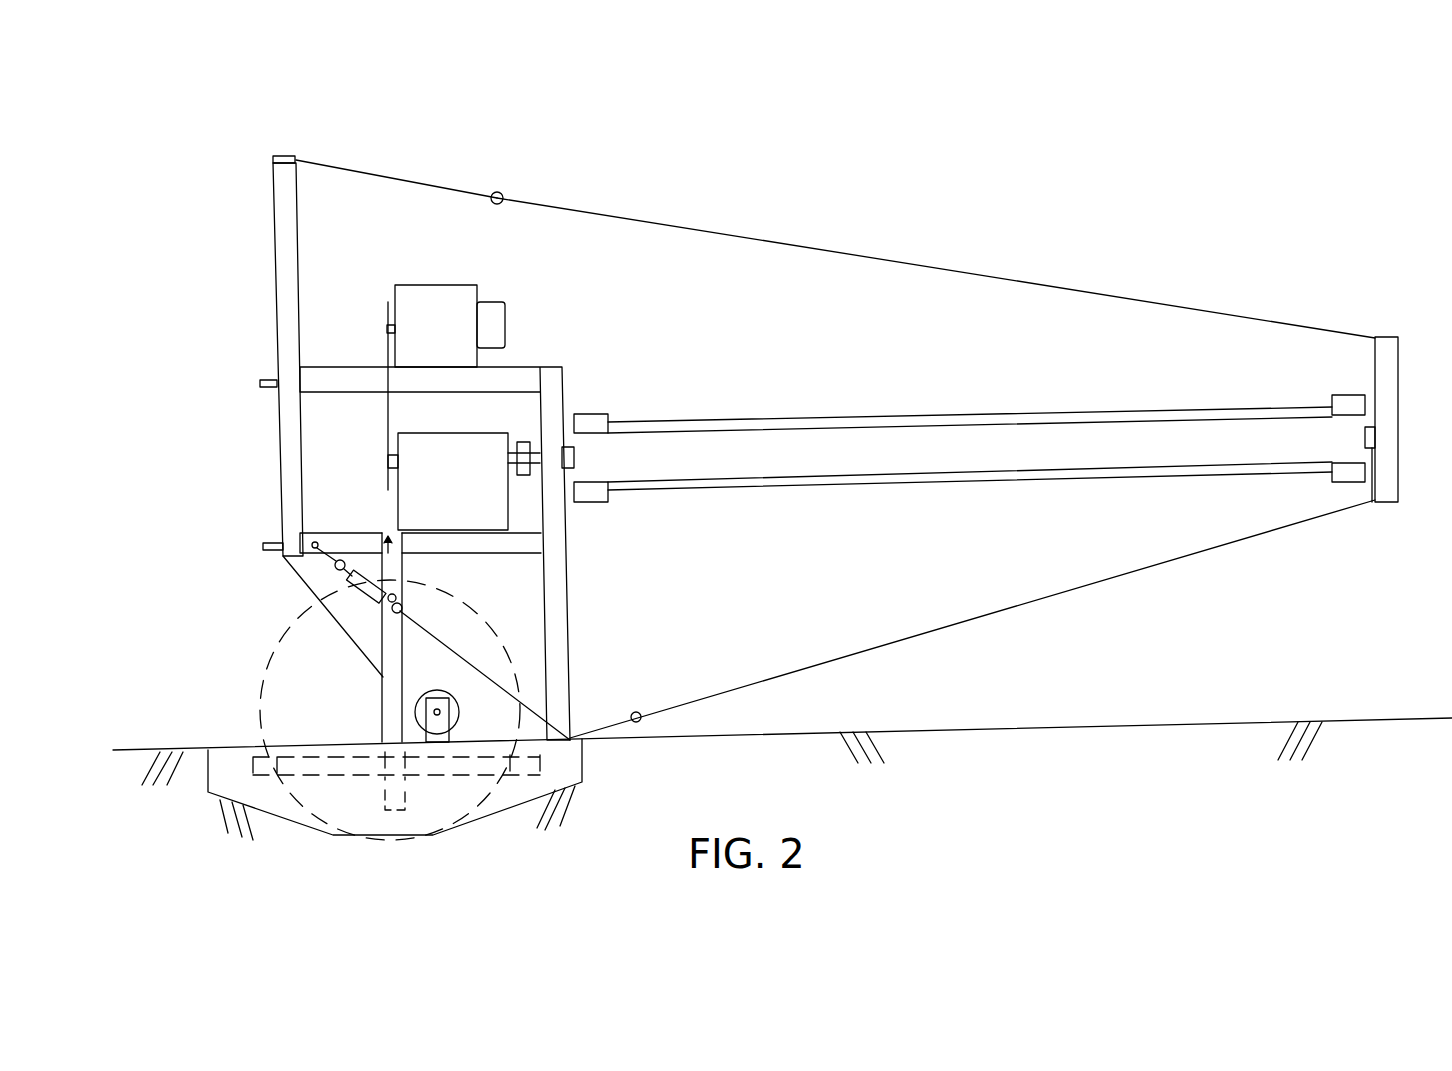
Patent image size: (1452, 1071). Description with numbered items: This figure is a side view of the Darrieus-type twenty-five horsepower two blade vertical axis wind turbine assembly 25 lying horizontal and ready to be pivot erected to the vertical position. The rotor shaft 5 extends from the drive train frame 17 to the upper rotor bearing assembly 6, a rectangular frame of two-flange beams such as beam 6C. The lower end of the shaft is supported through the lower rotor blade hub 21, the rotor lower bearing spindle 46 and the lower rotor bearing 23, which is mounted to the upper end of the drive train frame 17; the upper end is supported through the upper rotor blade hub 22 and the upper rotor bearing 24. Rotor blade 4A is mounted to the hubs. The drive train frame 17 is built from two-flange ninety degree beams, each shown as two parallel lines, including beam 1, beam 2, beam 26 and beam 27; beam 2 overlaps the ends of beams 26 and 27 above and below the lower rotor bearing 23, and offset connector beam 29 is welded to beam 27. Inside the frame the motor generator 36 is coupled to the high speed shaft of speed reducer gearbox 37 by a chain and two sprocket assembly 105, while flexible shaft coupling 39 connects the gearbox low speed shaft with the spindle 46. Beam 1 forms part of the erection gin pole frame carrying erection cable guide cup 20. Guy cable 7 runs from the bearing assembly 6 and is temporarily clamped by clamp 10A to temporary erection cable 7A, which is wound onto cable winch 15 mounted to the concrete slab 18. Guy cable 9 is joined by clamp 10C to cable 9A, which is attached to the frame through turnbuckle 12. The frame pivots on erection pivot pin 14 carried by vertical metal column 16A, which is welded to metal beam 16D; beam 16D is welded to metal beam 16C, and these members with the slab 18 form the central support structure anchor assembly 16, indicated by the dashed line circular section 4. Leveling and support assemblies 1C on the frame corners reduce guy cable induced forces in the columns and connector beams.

The two flange 90 degree beam 1 is at (277, 320).
The leveling and support assembly 1C is at (268, 394).
The two flange 90 degree beam 2 is at (567, 617).
The dashed line circular section 4 is at (268, 684).
The rotor blade 4A is at (868, 480).
The rotor shaft 5 is at (1025, 415).
The upper rotor bearing assembly 6 is at (1318, 320).
The two flange beam 6C is at (1382, 337).
The guy cable 7 is at (905, 263).
The temporary erection cable 7A is at (338, 172).
The guy cable 9 is at (917, 635).
The cable 9A is at (591, 730).
The cable clamp 10A is at (497, 192).
The cable clamp 10C is at (641, 710).
The turnbuckle 12 is at (380, 592).
The erection pivot pin 14 is at (399, 598).
The cable winch 15 is at (457, 712).
The central support structure anchor assembly 16 is at (268, 612).
The vertical metal column 16A is at (383, 712).
The metal beam 16C is at (328, 778).
The metal beam 16D is at (417, 795).
The drive train frame 17 is at (708, 165).
The concrete slab 18 is at (232, 748).
The erection cable guide cup 20 is at (276, 152).
The lower rotor blade hub 21 is at (614, 408).
The upper rotor blade hub 22 is at (1314, 395).
The lower rotor bearing 23 is at (570, 408).
The upper rotor bearing 24 is at (1372, 460).
The vertical axis wind turbine assembly 25 is at (1078, 137).
The two flange 90 degree beam 26 is at (320, 368).
The two flange 90 degree beam 27 is at (318, 532).
The offset connector beam 29 is at (393, 530).
The motor generator 36 is at (456, 343).
The speed reducer gearbox 37 is at (486, 485).
The flexible shaft coupling 39 is at (515, 567).
The rotor lower bearing spindle 46 is at (503, 597).
The chain and two sprocket assembly 105 is at (403, 412).